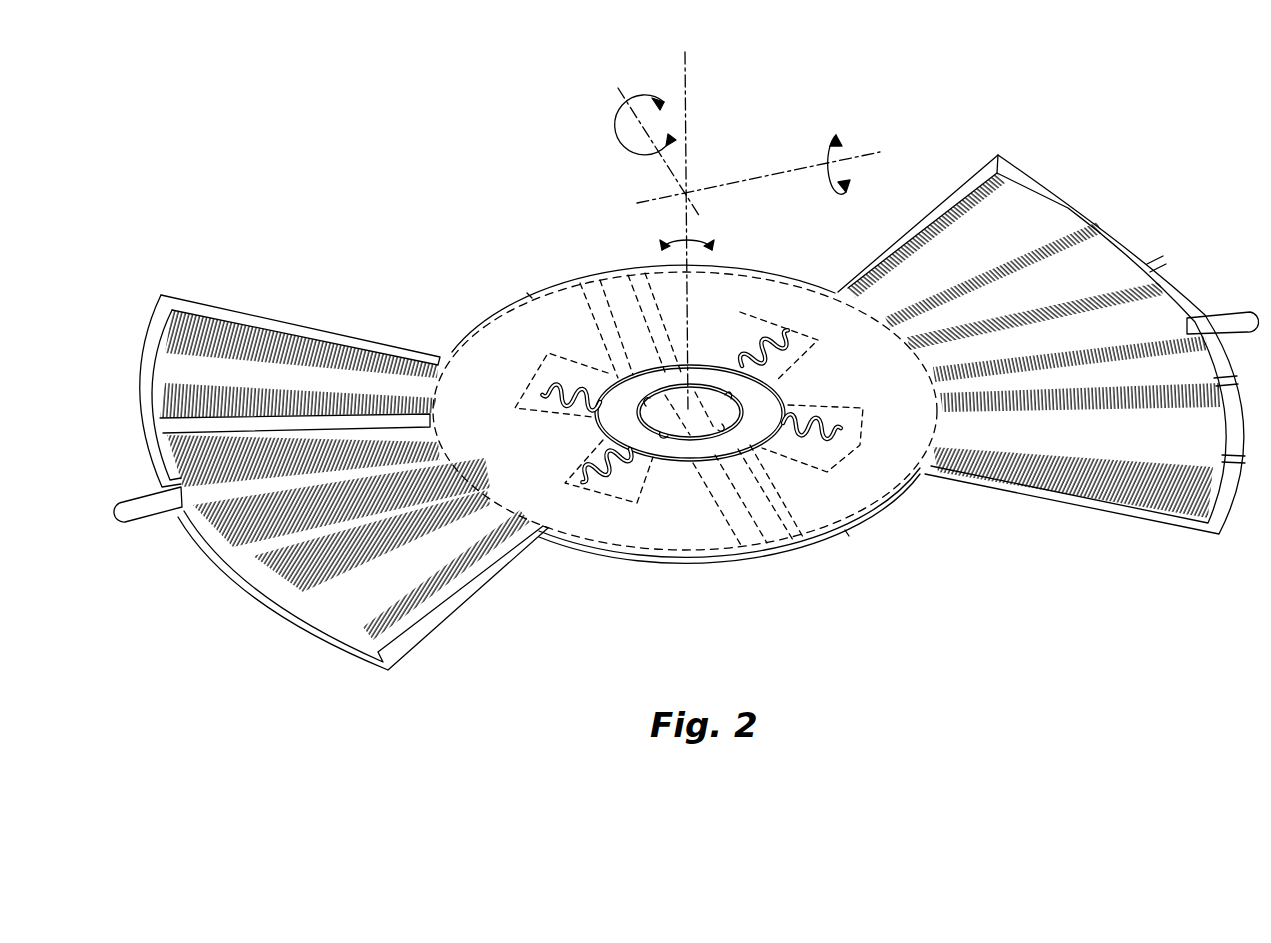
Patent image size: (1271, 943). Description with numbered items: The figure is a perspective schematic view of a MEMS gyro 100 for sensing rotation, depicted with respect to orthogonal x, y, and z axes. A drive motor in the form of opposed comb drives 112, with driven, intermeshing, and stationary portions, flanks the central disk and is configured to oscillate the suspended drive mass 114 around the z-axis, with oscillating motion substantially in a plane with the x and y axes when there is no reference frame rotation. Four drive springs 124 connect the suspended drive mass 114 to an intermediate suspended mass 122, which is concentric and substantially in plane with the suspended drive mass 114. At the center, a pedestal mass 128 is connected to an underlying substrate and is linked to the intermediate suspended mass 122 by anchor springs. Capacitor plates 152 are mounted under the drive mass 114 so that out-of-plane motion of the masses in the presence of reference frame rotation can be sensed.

The MEMS gyro 100 is at (380, 146).
The comb drives 112 is at (217, 298).
The suspended drive mass 114 is at (873, 492).
The intermediate suspended mass 122 is at (623, 383).
The drive springs 124 is at (789, 330).
The pedestal mass 128 is at (693, 413).
The capacitor plates 152 is at (527, 293).